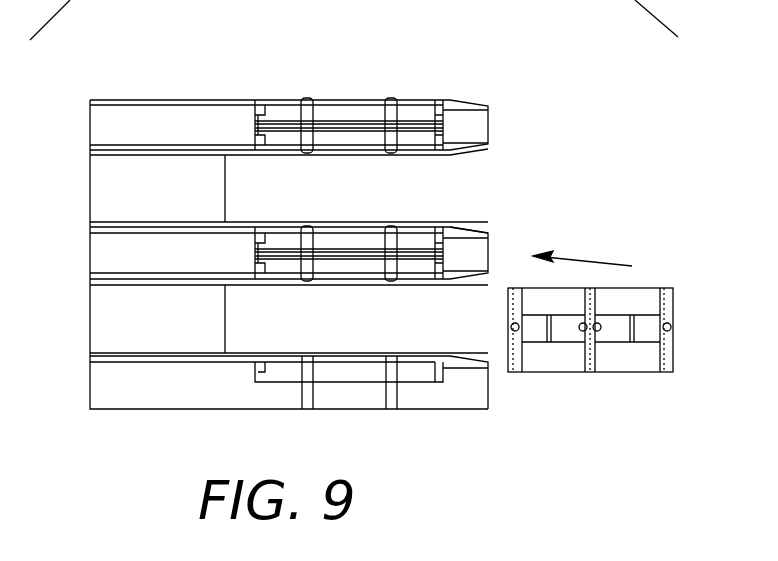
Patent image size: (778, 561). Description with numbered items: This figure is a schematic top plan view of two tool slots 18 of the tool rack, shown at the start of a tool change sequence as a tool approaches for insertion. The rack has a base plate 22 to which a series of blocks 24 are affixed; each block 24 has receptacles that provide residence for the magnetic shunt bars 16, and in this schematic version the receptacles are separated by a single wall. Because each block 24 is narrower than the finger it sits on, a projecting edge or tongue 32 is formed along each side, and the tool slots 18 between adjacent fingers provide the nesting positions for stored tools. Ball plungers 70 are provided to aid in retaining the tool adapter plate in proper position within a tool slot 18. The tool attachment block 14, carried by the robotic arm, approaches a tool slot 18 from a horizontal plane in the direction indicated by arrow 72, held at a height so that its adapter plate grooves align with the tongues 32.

The tool attachment block 14 is at (632, 372).
The magnetic shunt bars 16 is at (368, 360).
The tool slots 18 is at (438, 183).
The base plate 22 is at (115, 187).
The blocks 24 is at (190, 112).
The tongue 32 is at (450, 222).
The ball plungers 70 is at (392, 106).
The arrow 72 is at (608, 262).